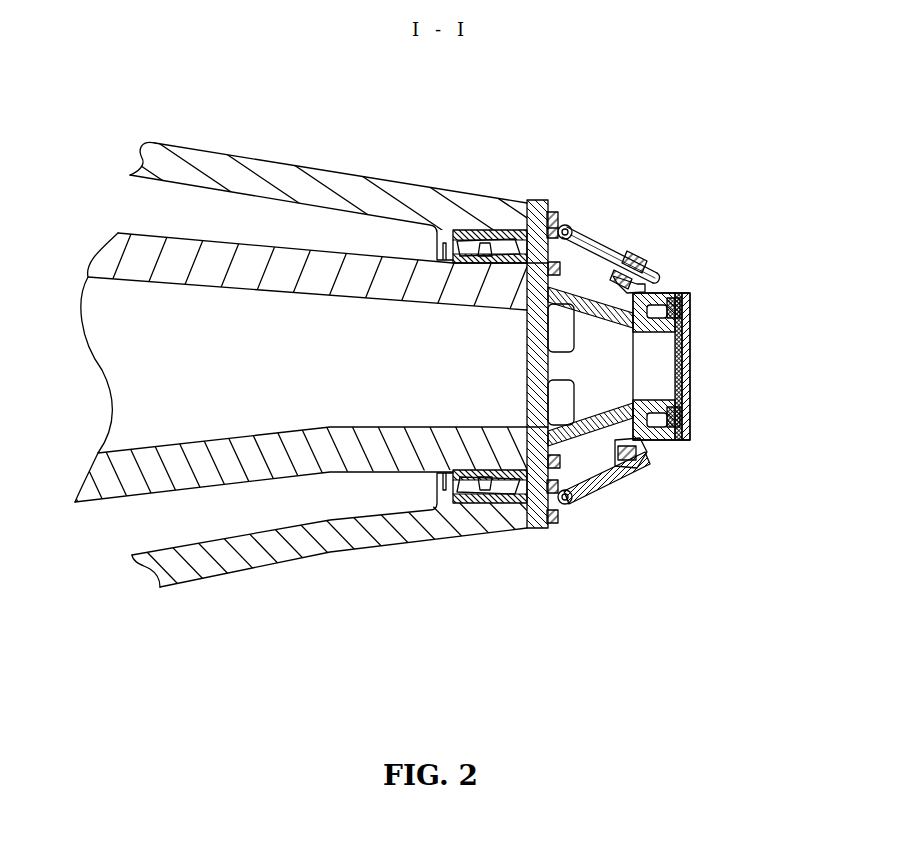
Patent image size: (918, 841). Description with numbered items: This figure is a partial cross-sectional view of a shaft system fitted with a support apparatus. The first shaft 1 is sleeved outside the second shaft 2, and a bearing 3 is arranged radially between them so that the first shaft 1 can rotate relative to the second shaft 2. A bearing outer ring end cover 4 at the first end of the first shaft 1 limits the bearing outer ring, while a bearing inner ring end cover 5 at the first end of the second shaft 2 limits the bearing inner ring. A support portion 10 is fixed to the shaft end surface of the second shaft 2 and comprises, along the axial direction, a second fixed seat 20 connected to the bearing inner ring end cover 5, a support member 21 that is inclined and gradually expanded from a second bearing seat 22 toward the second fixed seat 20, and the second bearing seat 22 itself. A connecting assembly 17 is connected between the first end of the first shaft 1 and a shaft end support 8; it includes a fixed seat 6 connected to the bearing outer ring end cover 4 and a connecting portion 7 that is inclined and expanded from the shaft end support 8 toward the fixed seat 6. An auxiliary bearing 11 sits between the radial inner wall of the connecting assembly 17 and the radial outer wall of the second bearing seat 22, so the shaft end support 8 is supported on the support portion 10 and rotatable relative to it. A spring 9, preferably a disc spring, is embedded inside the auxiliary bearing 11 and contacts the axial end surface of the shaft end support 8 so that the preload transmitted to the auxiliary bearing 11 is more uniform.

The first shaft 1 is at (218, 170).
The second shaft 2 is at (315, 268).
The bearing 3 is at (495, 242).
The bearing outer ring end cover 4 is at (553, 210).
The bearing inner ring end cover 5 is at (575, 244).
The fixed seat 6 is at (562, 225).
The connecting portion 7 is at (622, 268).
The shaft end support 8 is at (652, 293).
The spring 9 is at (687, 296).
The support portion 10 is at (592, 412).
The auxiliary bearing 11 is at (684, 400).
The connecting assembly 17 is at (475, 567).
The second fixed seat 20 is at (562, 475).
The support member 21 is at (612, 442).
The second bearing seat 22 is at (663, 438).